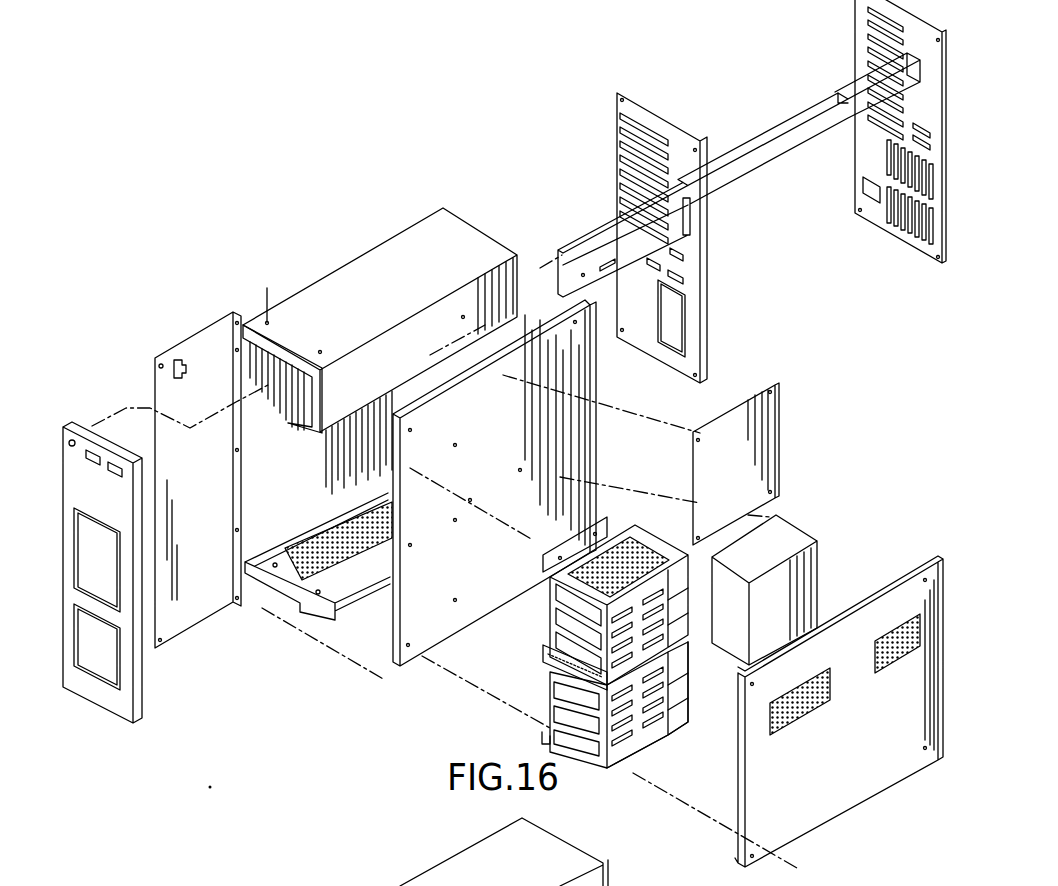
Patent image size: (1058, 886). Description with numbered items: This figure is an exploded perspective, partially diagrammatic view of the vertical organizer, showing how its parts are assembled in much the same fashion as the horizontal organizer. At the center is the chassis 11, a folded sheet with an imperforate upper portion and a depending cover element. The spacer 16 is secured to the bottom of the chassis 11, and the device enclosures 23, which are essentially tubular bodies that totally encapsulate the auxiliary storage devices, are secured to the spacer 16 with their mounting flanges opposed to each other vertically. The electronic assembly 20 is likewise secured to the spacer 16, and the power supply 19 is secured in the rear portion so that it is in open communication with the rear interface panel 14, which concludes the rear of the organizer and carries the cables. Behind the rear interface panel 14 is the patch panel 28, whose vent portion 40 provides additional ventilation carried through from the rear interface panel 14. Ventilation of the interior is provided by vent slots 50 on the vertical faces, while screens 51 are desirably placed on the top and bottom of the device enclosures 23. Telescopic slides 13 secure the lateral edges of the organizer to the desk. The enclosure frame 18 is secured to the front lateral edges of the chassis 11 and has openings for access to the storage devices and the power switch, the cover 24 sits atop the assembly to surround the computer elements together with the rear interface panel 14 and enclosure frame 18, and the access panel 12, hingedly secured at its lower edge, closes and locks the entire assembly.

The chassis 11 is at (392, 240).
The access panel 12 is at (190, 342).
The telescopic slides 13 is at (790, 150).
The rear interface panel 14 is at (707, 347).
The spacer 16 is at (420, 652).
The enclosure frame 18 is at (112, 722).
The power supply 19 is at (812, 537).
The electronic assembly 20 is at (758, 477).
The device enclosure 23 is at (547, 607).
The cover 24 is at (866, 777).
The patch panel 28 is at (862, 138).
The vent portion 40 is at (905, 230).
The vent slots 50 is at (653, 733).
The screens 51 is at (297, 570).